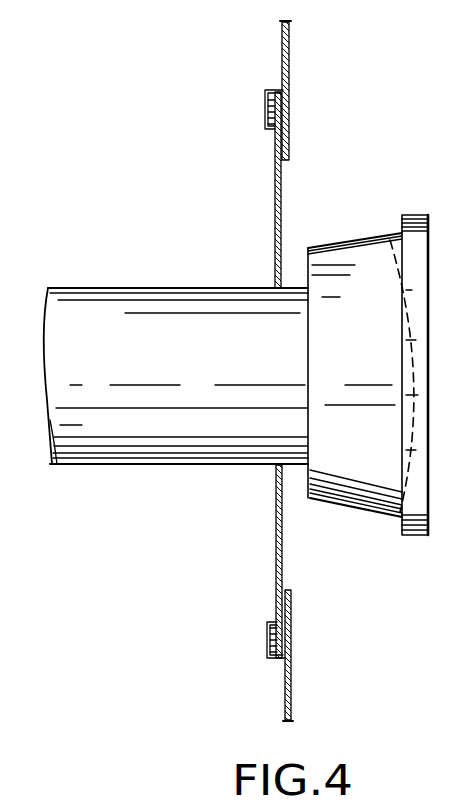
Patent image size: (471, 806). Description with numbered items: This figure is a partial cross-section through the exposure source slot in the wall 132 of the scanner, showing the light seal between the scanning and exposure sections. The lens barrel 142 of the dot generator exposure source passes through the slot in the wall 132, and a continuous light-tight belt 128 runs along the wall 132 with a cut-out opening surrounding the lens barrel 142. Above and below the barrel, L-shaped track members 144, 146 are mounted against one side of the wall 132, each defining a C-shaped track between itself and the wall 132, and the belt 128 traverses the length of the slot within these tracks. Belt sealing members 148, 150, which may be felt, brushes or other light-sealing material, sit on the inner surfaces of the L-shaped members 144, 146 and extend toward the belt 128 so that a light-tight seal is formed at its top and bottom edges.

The light-tight belt 128 is at (281, 213).
The wall 132 is at (290, 60).
The lens barrel 142 is at (157, 455).
The L-shaped track member 144 is at (268, 658).
The L-shaped track member 146 is at (265, 93).
The belt sealing member 148 is at (270, 132).
The belt sealing member 150 is at (272, 624).